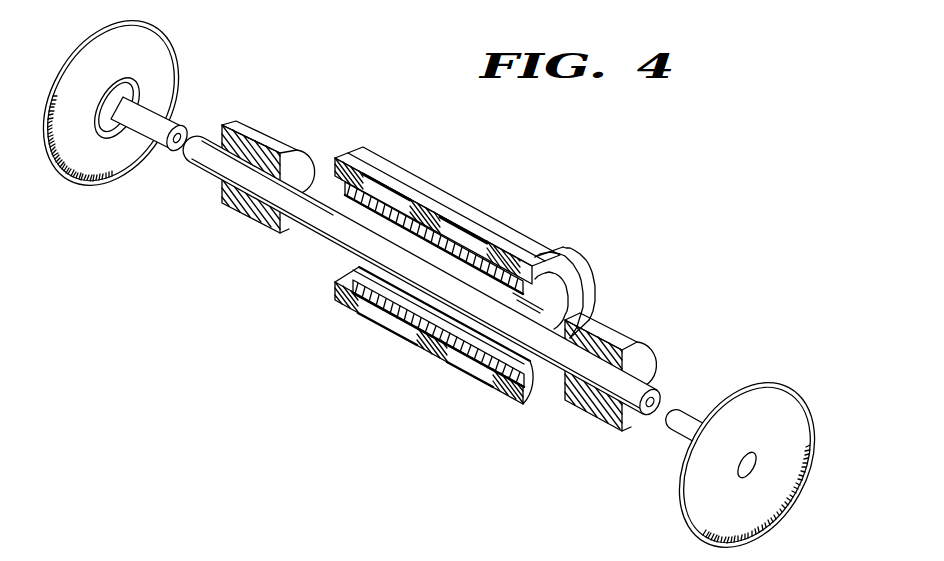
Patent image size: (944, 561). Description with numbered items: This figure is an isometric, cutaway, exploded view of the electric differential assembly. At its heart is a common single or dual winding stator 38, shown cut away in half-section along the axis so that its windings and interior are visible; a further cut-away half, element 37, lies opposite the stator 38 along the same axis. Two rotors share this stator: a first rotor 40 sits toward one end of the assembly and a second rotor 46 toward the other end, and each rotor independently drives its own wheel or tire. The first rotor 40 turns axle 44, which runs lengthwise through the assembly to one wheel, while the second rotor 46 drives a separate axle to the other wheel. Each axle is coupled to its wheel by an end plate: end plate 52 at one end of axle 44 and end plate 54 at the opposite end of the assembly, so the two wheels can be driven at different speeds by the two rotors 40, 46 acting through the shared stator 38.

The lower bearing half 37 is at (427, 348).
The stator 38 is at (442, 198).
The first rotor 40 is at (263, 142).
The axle 44 is at (325, 227).
The second rotor 46 is at (608, 333).
The end plate 52 is at (162, 47).
The end plate 54 is at (797, 408).